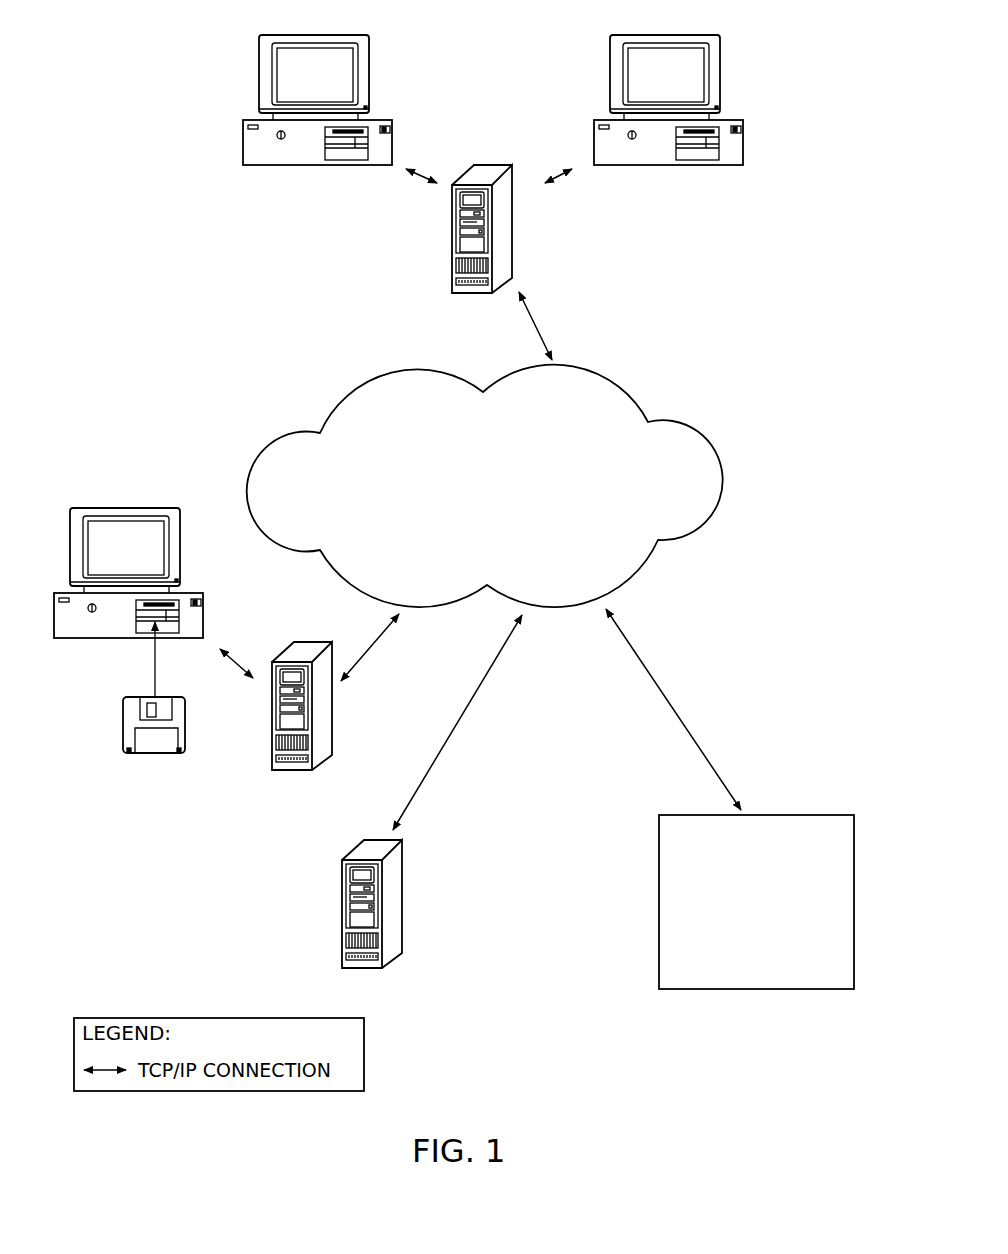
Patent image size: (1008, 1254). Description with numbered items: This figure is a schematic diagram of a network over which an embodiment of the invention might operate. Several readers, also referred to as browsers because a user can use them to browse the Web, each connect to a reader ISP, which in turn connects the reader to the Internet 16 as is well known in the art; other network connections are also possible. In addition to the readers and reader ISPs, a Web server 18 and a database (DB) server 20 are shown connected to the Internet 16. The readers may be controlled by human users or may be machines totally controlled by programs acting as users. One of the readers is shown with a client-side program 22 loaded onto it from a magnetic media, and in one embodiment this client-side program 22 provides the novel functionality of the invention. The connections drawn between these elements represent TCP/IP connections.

The Internet 16 is at (722, 480).
The Web server 18 is at (782, 990).
The database (DB) server 20 is at (402, 929).
The client-side program 22 is at (185, 730).